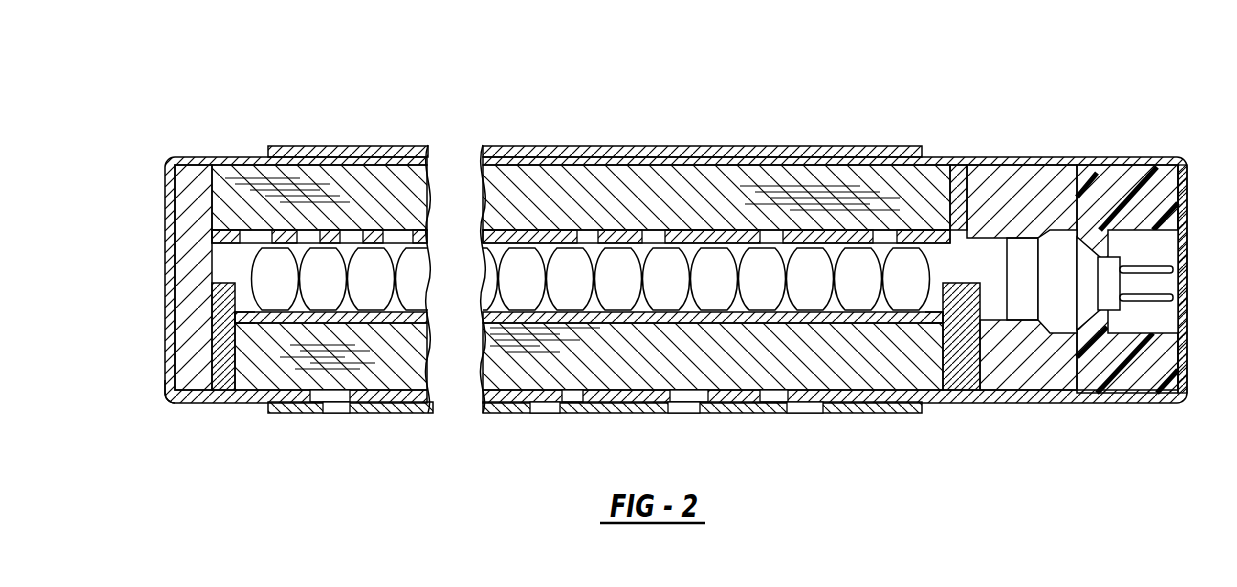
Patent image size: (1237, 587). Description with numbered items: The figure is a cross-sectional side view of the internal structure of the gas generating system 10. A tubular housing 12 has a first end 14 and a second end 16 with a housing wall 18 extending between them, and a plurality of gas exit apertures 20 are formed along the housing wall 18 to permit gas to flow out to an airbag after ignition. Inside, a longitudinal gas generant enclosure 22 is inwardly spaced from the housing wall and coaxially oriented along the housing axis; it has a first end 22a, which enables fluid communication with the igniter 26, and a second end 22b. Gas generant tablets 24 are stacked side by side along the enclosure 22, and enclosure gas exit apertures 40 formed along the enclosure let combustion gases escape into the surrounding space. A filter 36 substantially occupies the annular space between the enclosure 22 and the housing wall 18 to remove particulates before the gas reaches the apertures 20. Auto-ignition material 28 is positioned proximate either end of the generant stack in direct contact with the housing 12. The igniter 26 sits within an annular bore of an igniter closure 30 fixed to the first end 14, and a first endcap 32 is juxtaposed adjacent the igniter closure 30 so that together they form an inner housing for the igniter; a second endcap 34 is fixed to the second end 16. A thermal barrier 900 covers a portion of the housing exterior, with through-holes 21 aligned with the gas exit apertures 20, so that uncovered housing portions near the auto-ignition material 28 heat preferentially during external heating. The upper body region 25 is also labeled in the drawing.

The gas generating system 10 is at (890, 74).
The tubular housing 12 is at (975, 403).
The first end 14 is at (1160, 158).
The second end 16 is at (193, 152).
The housing wall 18 is at (525, 413).
The gas exit apertures 20 is at (682, 400).
The through-holes 21 is at (333, 407).
The gas generant enclosure 22 is at (778, 322).
The enclosure first end 22a is at (935, 318).
The enclosure second end 22b is at (263, 322).
The gas generant tablets 24 is at (713, 263).
The upper body 25 is at (548, 245).
The igniter 26 is at (1065, 262).
The auto-ignition material 28 is at (222, 292).
The igniter closure 30 is at (1140, 370).
The first endcap 32 is at (1037, 367).
The second endcap 34 is at (180, 403).
The filter 36 is at (840, 367).
The enclosure gas exit apertures 40 is at (353, 237).
The thermal barrier 900 is at (815, 147).